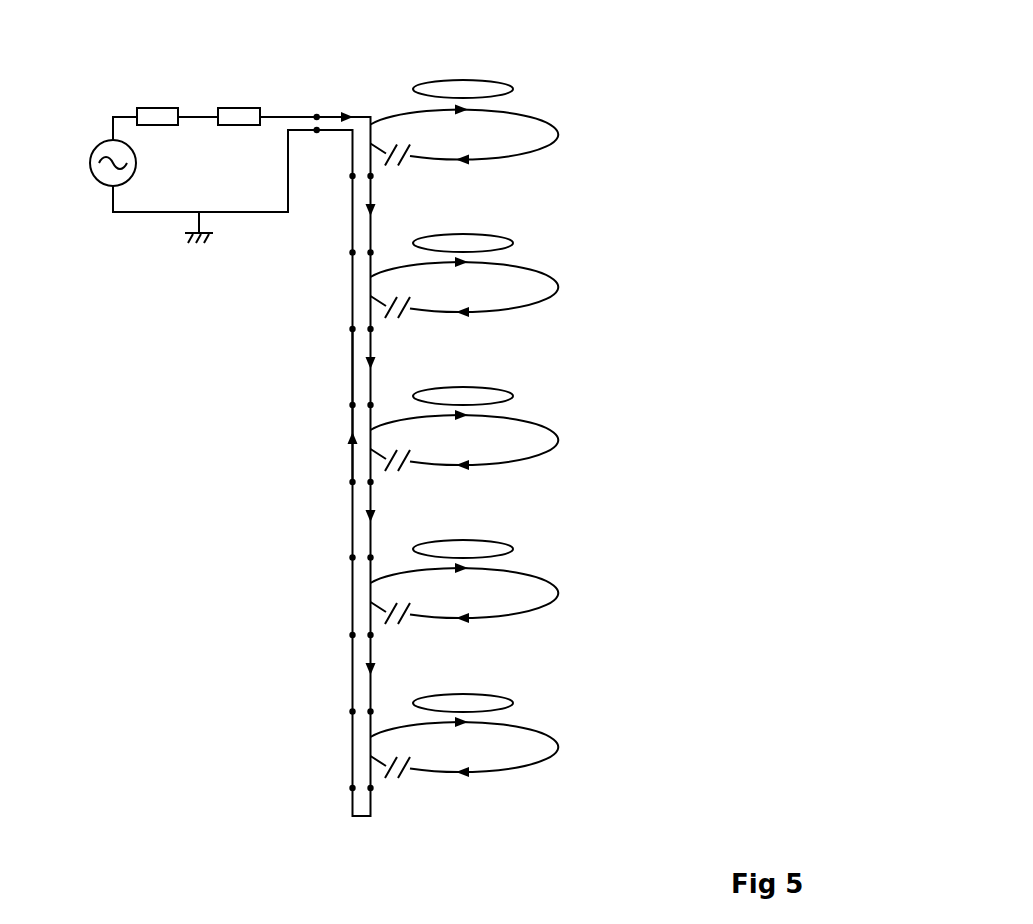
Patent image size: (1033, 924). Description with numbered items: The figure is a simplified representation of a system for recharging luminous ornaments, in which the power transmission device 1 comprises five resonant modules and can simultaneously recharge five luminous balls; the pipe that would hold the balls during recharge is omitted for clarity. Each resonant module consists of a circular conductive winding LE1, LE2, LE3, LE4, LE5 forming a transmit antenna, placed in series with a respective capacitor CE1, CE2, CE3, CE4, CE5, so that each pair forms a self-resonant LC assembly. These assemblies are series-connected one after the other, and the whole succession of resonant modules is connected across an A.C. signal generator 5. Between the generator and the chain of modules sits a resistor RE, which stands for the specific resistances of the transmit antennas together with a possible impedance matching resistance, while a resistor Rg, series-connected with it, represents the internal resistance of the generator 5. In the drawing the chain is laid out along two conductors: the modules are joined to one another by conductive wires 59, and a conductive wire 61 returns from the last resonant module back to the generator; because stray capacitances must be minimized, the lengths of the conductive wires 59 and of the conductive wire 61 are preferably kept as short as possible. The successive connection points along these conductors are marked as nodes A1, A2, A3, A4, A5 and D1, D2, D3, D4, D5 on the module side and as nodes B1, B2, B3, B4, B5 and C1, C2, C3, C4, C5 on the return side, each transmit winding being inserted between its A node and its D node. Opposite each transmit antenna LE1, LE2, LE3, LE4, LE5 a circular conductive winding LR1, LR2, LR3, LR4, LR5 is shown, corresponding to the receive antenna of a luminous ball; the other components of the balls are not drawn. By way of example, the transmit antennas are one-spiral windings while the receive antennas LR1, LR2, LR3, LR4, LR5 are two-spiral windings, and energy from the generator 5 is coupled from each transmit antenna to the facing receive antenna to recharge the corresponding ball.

The power transmission device 1 is at (278, 508).
The A.C. signal generator 5 is at (90, 163).
The resistor Rg is at (160, 108).
The resistor RE is at (237, 108).
The conductive wires 59 is at (370, 193).
The conductive wire 61 is at (352, 365).
The node A1 is at (317, 117).
The node A2 is at (370, 252).
The node A3 is at (370, 405).
The node A4 is at (370, 558).
The node A5 is at (370, 712).
The node B1 is at (317, 130).
The node B2 is at (352, 252).
The node B3 is at (352, 405).
The node B4 is at (352, 558).
The node B5 is at (352, 712).
The node C1 is at (352, 176).
The node C2 is at (352, 329).
The node C3 is at (352, 482).
The node C4 is at (352, 635).
The node C5 is at (352, 788).
The node D1 is at (370, 176).
The node D2 is at (370, 329).
The node D3 is at (370, 482).
The node D4 is at (370, 635).
The node D5 is at (370, 788).
The circular conductive winding LR1 is at (513, 89).
The circular conductive winding LR2 is at (513, 243).
The circular conductive winding LR3 is at (513, 396).
The circular conductive winding LR4 is at (513, 549).
The circular conductive winding LR5 is at (513, 703).
The circular conductive winding LE1 is at (558, 134).
The circular conductive winding LE2 is at (558, 287).
The circular conductive winding LE3 is at (558, 440).
The circular conductive winding LE4 is at (558, 593).
The circular conductive winding LE5 is at (558, 747).
The capacitor CE1 is at (405, 164).
The capacitor CE2 is at (405, 317).
The capacitor CE3 is at (405, 470).
The capacitor CE4 is at (405, 623).
The capacitor CE5 is at (405, 777).